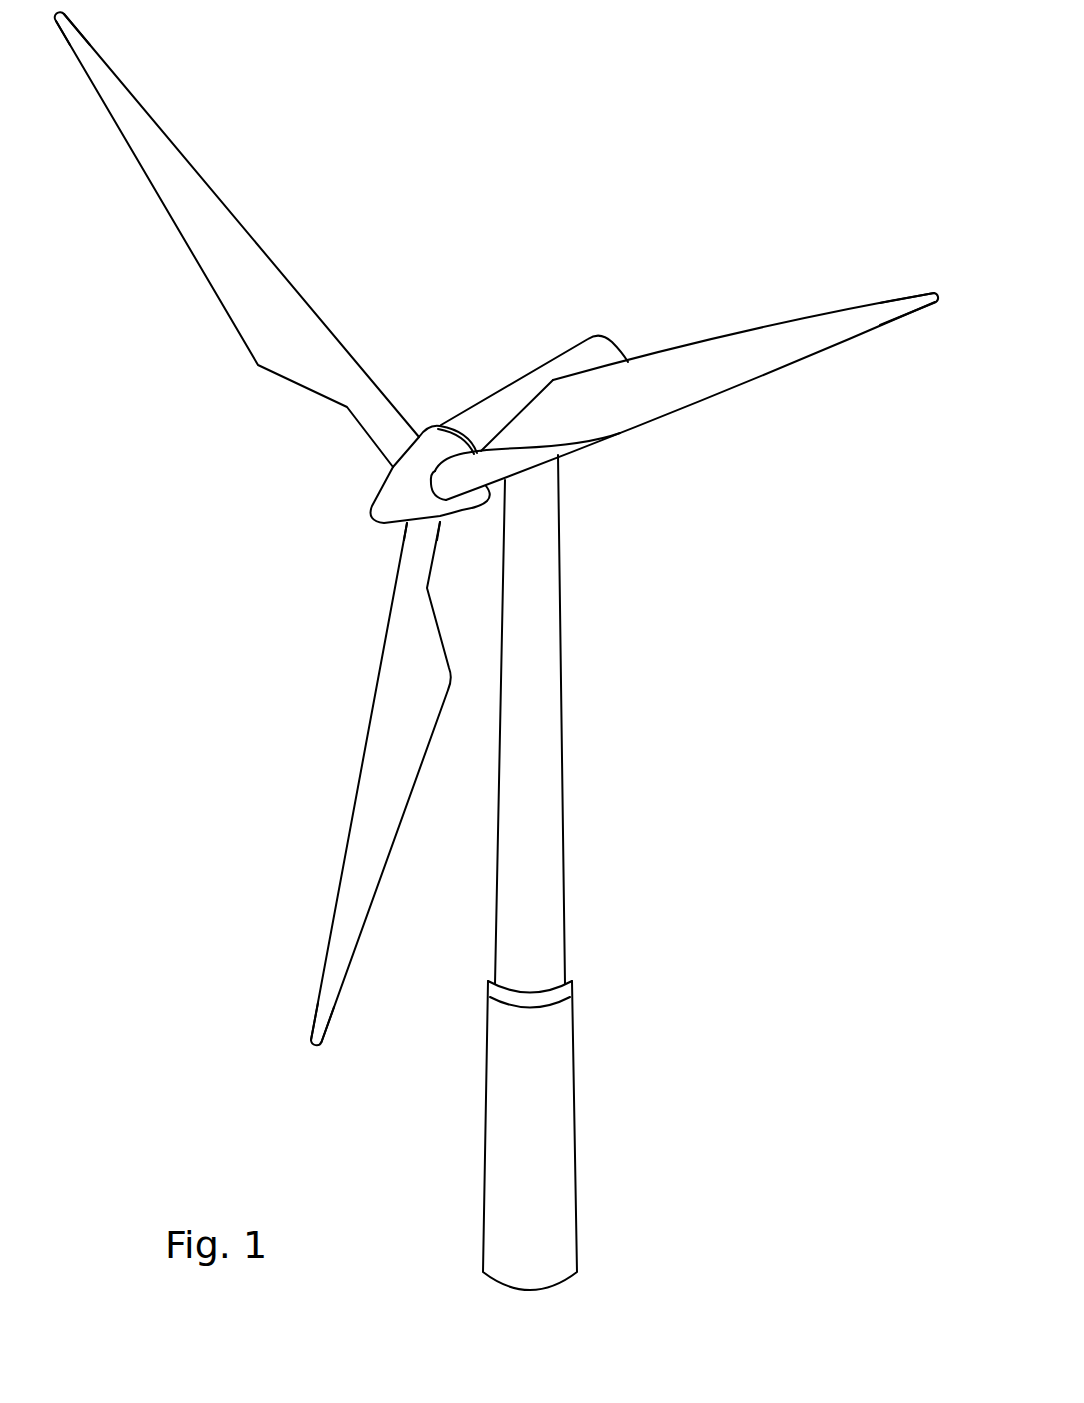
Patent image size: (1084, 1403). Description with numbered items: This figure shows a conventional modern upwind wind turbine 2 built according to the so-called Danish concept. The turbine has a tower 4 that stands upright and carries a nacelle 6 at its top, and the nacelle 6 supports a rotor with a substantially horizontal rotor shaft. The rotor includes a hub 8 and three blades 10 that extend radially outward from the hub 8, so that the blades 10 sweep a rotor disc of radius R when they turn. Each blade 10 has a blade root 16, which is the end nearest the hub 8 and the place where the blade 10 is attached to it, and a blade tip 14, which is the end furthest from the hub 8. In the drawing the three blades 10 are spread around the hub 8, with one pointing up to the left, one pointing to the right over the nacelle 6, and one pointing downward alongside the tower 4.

The wind turbine 2 is at (663, 808).
The tower 4 is at (550, 725).
The nacelle 6 is at (490, 403).
The hub 8 is at (393, 497).
The blade 10 is at (273, 335).
The blade tip 14 is at (103, 75).
The blade root 16 is at (400, 447).